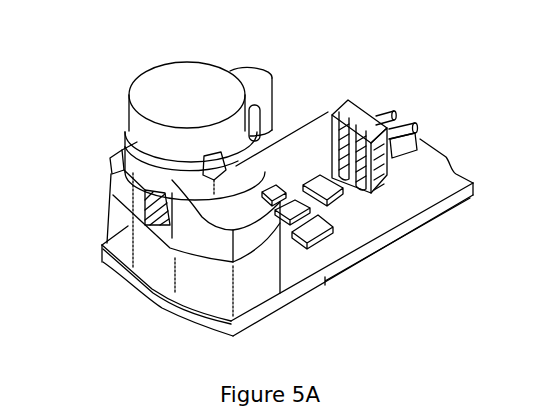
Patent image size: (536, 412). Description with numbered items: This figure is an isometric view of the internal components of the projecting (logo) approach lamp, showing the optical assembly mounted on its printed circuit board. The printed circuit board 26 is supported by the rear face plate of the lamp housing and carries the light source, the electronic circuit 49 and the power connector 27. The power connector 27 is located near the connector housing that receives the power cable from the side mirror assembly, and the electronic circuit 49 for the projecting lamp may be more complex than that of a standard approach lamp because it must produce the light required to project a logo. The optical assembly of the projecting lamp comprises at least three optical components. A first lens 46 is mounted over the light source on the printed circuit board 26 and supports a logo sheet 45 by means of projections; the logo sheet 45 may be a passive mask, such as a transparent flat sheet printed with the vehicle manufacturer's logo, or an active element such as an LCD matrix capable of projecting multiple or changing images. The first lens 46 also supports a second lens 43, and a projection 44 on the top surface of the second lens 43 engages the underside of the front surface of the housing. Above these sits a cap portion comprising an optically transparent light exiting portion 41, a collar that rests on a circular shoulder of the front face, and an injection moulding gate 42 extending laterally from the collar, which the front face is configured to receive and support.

The printed circuit board 26 is at (313, 298).
The power connector 27 is at (407, 173).
The light exiting portion 41 is at (127, 117).
The injection moulding gate 42 is at (279, 95).
The second lens 43 is at (127, 184).
The projection 44 is at (231, 170).
The logo sheet 45 is at (163, 225).
The first lens 46 is at (188, 285).
The electronic circuit 49 is at (337, 242).